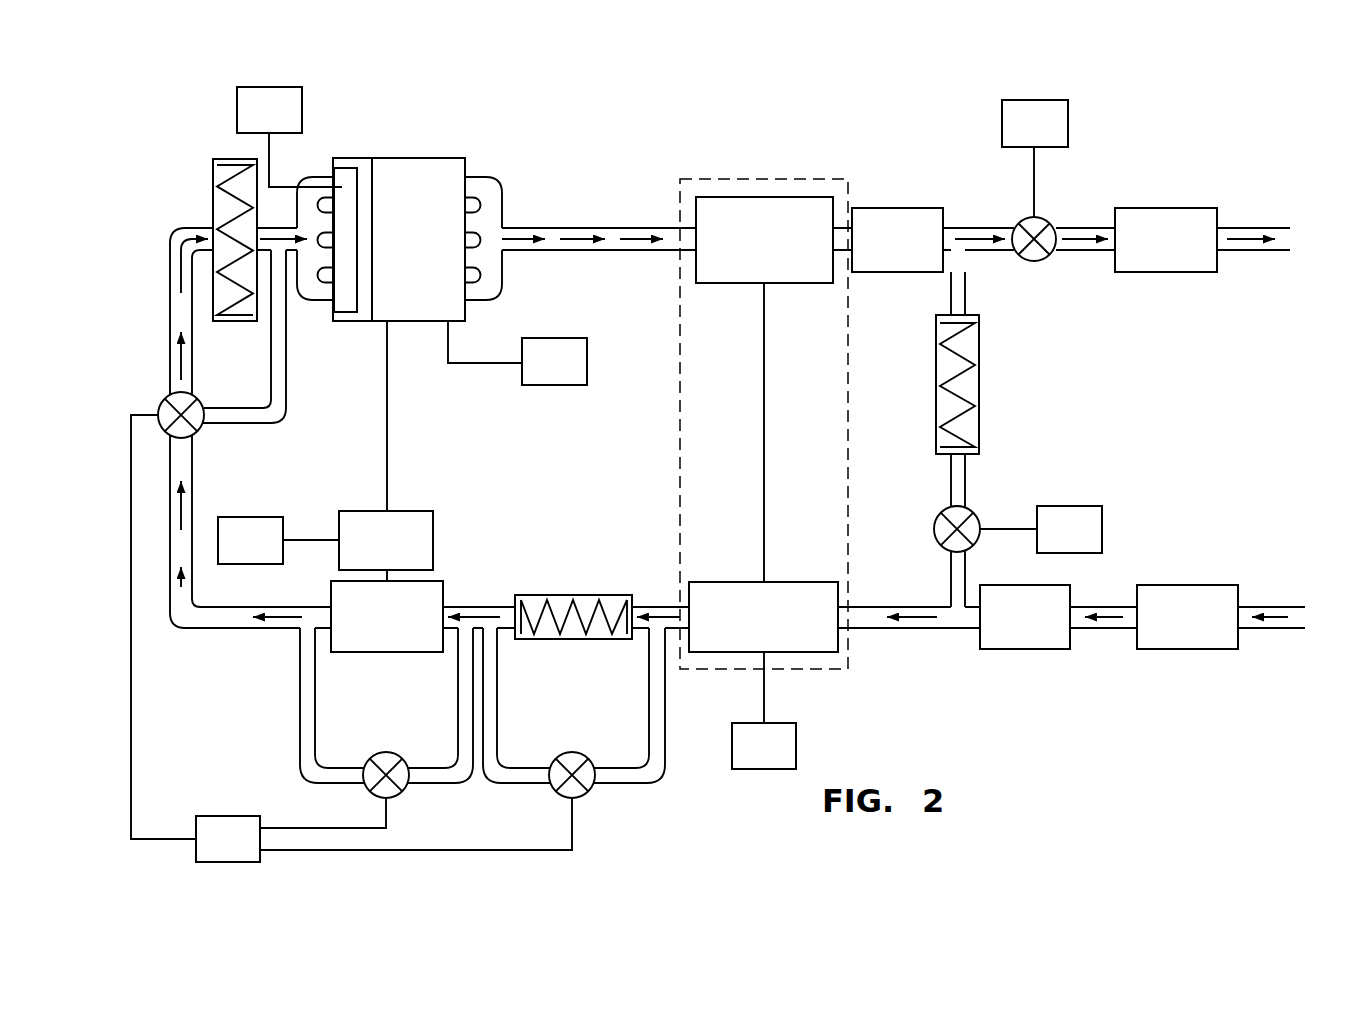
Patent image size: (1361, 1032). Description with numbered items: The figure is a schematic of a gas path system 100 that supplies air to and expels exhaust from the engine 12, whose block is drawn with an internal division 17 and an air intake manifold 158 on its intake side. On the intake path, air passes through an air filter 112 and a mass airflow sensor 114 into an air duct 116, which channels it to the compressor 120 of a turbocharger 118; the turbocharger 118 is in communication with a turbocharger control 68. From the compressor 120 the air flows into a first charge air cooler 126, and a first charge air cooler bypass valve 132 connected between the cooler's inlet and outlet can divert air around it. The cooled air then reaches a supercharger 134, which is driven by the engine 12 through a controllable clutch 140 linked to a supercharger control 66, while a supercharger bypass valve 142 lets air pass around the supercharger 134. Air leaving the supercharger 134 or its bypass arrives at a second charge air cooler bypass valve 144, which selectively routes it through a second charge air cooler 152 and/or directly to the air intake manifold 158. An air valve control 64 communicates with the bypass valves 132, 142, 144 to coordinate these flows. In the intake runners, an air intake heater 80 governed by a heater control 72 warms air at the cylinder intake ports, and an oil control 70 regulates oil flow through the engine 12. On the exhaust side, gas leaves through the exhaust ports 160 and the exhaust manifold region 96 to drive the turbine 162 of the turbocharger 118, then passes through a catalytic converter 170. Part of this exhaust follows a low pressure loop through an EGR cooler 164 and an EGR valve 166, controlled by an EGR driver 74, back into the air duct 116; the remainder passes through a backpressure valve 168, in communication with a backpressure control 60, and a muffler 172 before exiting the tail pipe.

The engine 12 is at (413, 158).
The cylinder head 17 is at (362, 157).
The backpressure control 60 is at (1035, 158).
The air valve control 64 is at (351, 638).
The supercharger control 66 is at (278, 540).
The turbocharger control 68 is at (764, 746).
The oil control 70 is at (554, 361).
The heater control 72 is at (289, 137).
The EGR driver 74 is at (1041, 529).
The air intake heater 80 is at (342, 290).
The exhaust manifold 96 is at (477, 177).
The gas path system 100 is at (655, 120).
The air filter 112 is at (1212, 650).
The mass airflow sensor 114 is at (1052, 650).
The air duct 116 is at (960, 630).
The turbocharger 118 is at (848, 198).
The compressor 120 is at (809, 653).
The first charge air cooler 126 is at (555, 595).
The first charge air cooler bypass valve 132 is at (586, 792).
The supercharger 134 is at (380, 653).
The controllable clutch 140 is at (416, 511).
The supercharger bypass valve 142 is at (403, 792).
The second charge air cooler bypass valve 144 is at (165, 396).
The second charge air cooler 152 is at (213, 180).
The air intake manifold 158 is at (323, 176).
The exhaust port 160 is at (505, 228).
The turbine 162 is at (730, 197).
The EGR cooler 164 is at (980, 402).
The EGR valve 166 is at (935, 532).
The backpressure valve 168 is at (1045, 261).
The catalytic converter 170 is at (935, 208).
The muffler 172 is at (1185, 272).